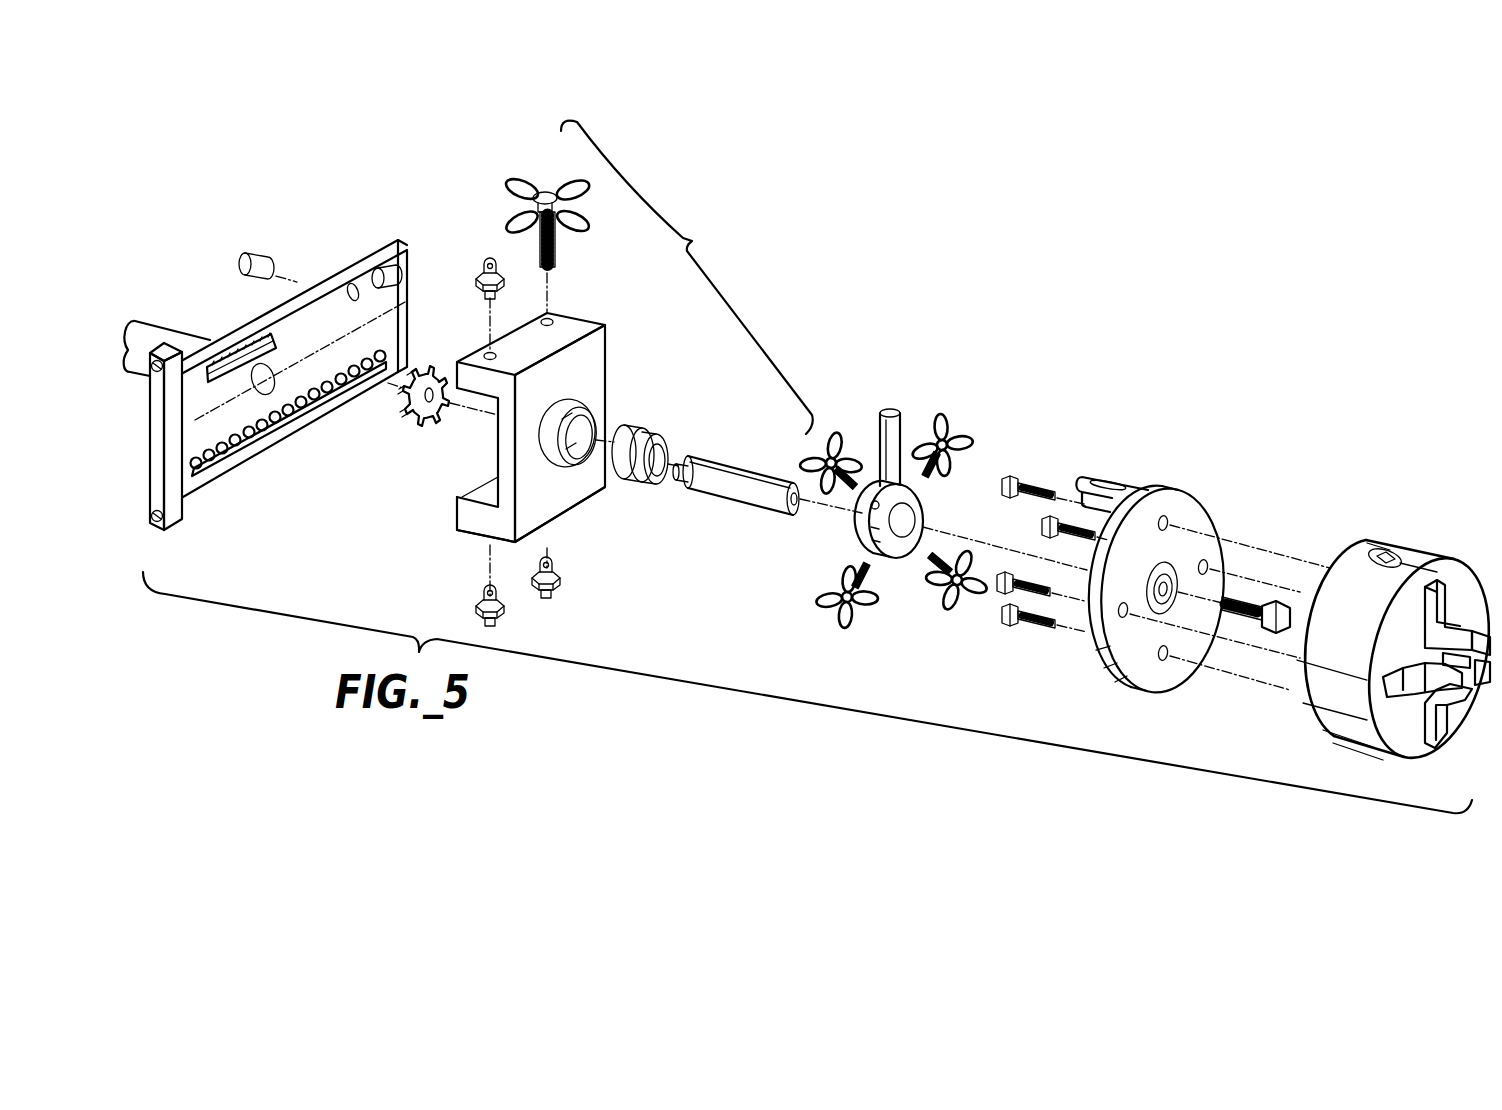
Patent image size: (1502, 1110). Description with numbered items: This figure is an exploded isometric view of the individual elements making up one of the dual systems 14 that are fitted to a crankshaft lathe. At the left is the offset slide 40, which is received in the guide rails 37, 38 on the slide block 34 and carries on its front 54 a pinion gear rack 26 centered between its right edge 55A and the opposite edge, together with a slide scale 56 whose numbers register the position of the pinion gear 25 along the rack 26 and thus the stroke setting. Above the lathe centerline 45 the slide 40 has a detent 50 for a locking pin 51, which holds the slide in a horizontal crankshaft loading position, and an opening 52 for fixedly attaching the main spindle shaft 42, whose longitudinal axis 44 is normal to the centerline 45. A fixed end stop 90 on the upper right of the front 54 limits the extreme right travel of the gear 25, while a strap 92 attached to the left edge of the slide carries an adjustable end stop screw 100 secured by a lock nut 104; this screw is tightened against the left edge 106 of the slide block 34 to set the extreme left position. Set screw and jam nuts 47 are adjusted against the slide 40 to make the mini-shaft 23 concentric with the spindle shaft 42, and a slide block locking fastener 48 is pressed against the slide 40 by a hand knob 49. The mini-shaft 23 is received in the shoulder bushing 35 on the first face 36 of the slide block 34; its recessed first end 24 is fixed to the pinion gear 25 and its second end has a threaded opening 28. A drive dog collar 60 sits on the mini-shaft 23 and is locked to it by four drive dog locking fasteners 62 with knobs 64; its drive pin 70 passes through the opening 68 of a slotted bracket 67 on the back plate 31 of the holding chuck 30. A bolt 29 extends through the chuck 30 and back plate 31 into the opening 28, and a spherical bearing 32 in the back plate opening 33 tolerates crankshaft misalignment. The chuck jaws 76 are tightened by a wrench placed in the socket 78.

The system 14 is at (807, 467).
The mini-shaft 23 is at (721, 455).
The recessed first end 24 is at (684, 473).
The pinion gear 25 is at (411, 429).
The gear rack 26 is at (322, 407).
The threaded opening 28 is at (793, 515).
The bolt 29 is at (1278, 600).
The holding chuck 30 is at (1404, 542).
The back plate 31 is at (1141, 478).
The spherical bearing 32 is at (1175, 588).
The opening 33 is at (1172, 585).
The slide block 34 is at (568, 306).
The shoulder bushing 35 is at (653, 430).
The first face 36 is at (590, 363).
The guide rail 37 is at (467, 400).
The guide rail 38 is at (463, 500).
The offset slide 40 is at (387, 228).
The main spindle shaft 42 is at (152, 322).
The longitudinal axis 44 is at (324, 365).
The longitudinal axis 45 is at (408, 308).
The set screw and jam nut 47 is at (474, 266).
The slide block locking fastener 48 is at (557, 258).
The hand knob 49 is at (510, 176).
The detent 50 is at (351, 283).
The locking pin 51 is at (252, 252).
The opening 52 is at (264, 395).
The front 54 is at (402, 258).
The right edge 55A is at (412, 352).
The slide scale 56 is at (272, 334).
The drive dog collar 60 is at (907, 511).
The drive dog locking fastener 62 is at (937, 558).
The knob 64 is at (832, 585).
The slotted bracket 67 is at (1080, 477).
The opening 68 is at (1110, 485).
The drive pin 70 is at (895, 403).
The chuck jaw 76 is at (1470, 733).
The socket 78 is at (1385, 547).
The end stop 90 is at (385, 265).
The strap 92 is at (170, 483).
The end stop screw 100 is at (148, 523).
The lock nut 104 is at (168, 520).
The left edge 106 is at (467, 530).